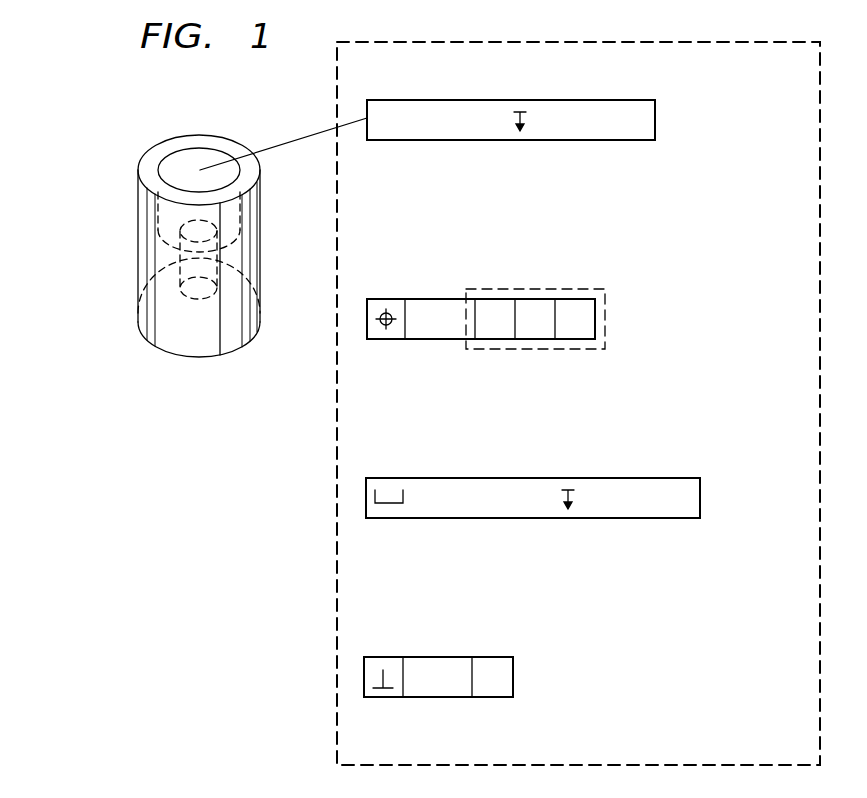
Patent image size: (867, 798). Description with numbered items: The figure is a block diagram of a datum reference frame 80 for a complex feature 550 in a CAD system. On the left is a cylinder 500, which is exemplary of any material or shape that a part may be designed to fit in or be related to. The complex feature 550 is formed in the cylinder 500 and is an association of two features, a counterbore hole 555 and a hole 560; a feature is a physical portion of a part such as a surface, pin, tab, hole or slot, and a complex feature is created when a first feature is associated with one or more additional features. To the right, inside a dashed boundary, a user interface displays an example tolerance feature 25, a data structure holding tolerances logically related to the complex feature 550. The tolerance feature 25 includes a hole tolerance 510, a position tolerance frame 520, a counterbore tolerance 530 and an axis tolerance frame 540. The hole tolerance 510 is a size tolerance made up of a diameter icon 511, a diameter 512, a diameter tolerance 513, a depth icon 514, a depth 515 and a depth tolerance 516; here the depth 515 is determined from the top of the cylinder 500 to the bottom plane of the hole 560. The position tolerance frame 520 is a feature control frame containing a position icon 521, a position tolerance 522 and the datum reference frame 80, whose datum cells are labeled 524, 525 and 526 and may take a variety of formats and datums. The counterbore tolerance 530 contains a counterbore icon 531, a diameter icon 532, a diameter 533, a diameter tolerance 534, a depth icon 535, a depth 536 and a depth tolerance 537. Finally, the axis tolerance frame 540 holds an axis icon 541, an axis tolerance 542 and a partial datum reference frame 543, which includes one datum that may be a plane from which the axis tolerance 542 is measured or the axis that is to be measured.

The tolerance feature 25 is at (335, 590).
The datum reference frame 80 is at (585, 340).
The cylinder 500 is at (224, 148).
The hole tolerance 510 is at (559, 130).
The diameter icon 511 is at (388, 133).
The diameter 512 is at (431, 110).
The diameter tolerance 513 is at (493, 110).
The depth icon 514 is at (526, 134).
The depth 515 is at (565, 110).
The depth tolerance 516 is at (627, 110).
The position tolerance frame 520 is at (531, 321).
The position icon 521 is at (386, 307).
The position tolerance 522 is at (436, 304).
The primary datum A 524 is at (496, 304).
The secondary datum B 525 is at (536, 340).
The tertiary datum C 526 is at (578, 304).
The counterbore tolerance 530 is at (585, 505).
The counterbore icon 531 is at (388, 485).
The diameter icon 532 is at (430, 510).
The diameter 533 is at (471, 485).
The diameter tolerance 534 is at (541, 485).
The depth icon 535 is at (572, 485).
The depth 536 is at (600, 510).
The depth tolerance 537 is at (665, 485).
The axis tolerance frame 540 is at (498, 647).
The axis icon 541 is at (390, 699).
The axis tolerance 542 is at (432, 699).
The partial datum reference frame 543 is at (540, 696).
The complex feature 550 is at (154, 268).
The counterbore hole 555 is at (158, 213).
The hole 560 is at (178, 282).